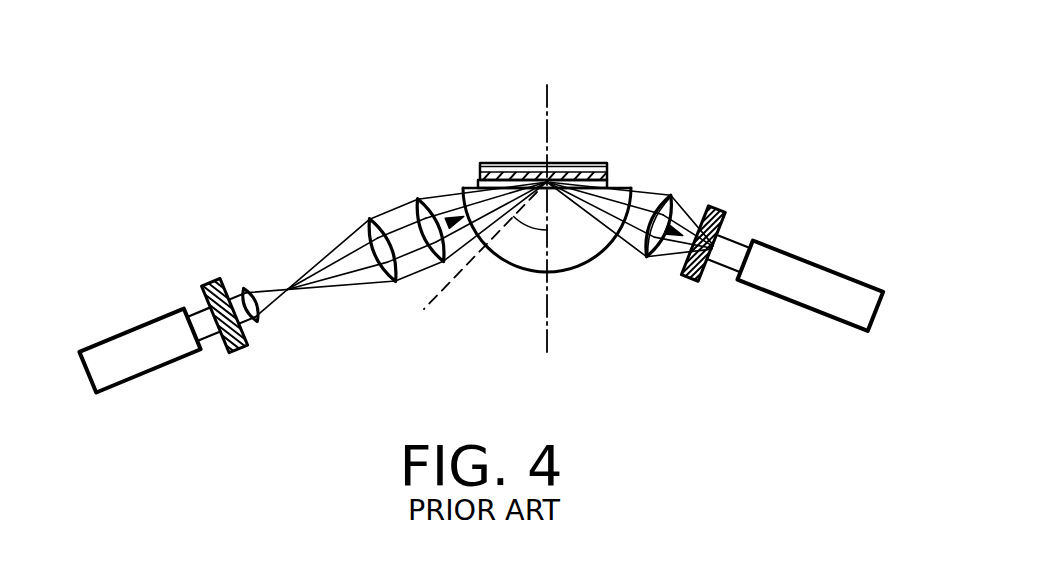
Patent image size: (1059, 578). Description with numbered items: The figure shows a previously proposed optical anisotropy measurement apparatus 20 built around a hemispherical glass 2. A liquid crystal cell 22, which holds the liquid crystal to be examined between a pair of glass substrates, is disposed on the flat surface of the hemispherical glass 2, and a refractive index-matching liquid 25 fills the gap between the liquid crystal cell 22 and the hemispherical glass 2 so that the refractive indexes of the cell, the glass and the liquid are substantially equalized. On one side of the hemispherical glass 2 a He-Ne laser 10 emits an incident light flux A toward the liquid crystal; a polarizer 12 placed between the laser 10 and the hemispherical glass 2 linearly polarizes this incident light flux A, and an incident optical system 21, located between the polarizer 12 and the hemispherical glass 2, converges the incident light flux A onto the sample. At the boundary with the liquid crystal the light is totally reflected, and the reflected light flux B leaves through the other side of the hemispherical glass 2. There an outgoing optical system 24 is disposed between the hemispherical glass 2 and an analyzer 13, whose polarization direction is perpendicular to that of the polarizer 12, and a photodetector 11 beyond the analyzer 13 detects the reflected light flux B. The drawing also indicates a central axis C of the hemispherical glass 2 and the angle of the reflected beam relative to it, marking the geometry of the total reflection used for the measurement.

The optical anisotropy measurement apparatus 20 is at (483, 255).
The He-Ne laser 10 is at (151, 345).
The polarizer 12 is at (225, 316).
The incident optical system 21 is at (336, 269).
The refractive index-matching liquid 25 is at (475, 187).
The liquid crystal cell 22 is at (510, 173).
The hemispherical glass 2 is at (575, 266).
The outgoing optical system 24 is at (658, 226).
The analyzer 13 is at (704, 242).
The photodetector 11 is at (793, 279).
The incident light flux A is at (399, 243).
The reflected light flux B is at (630, 214).
The optical axis C is at (548, 113).